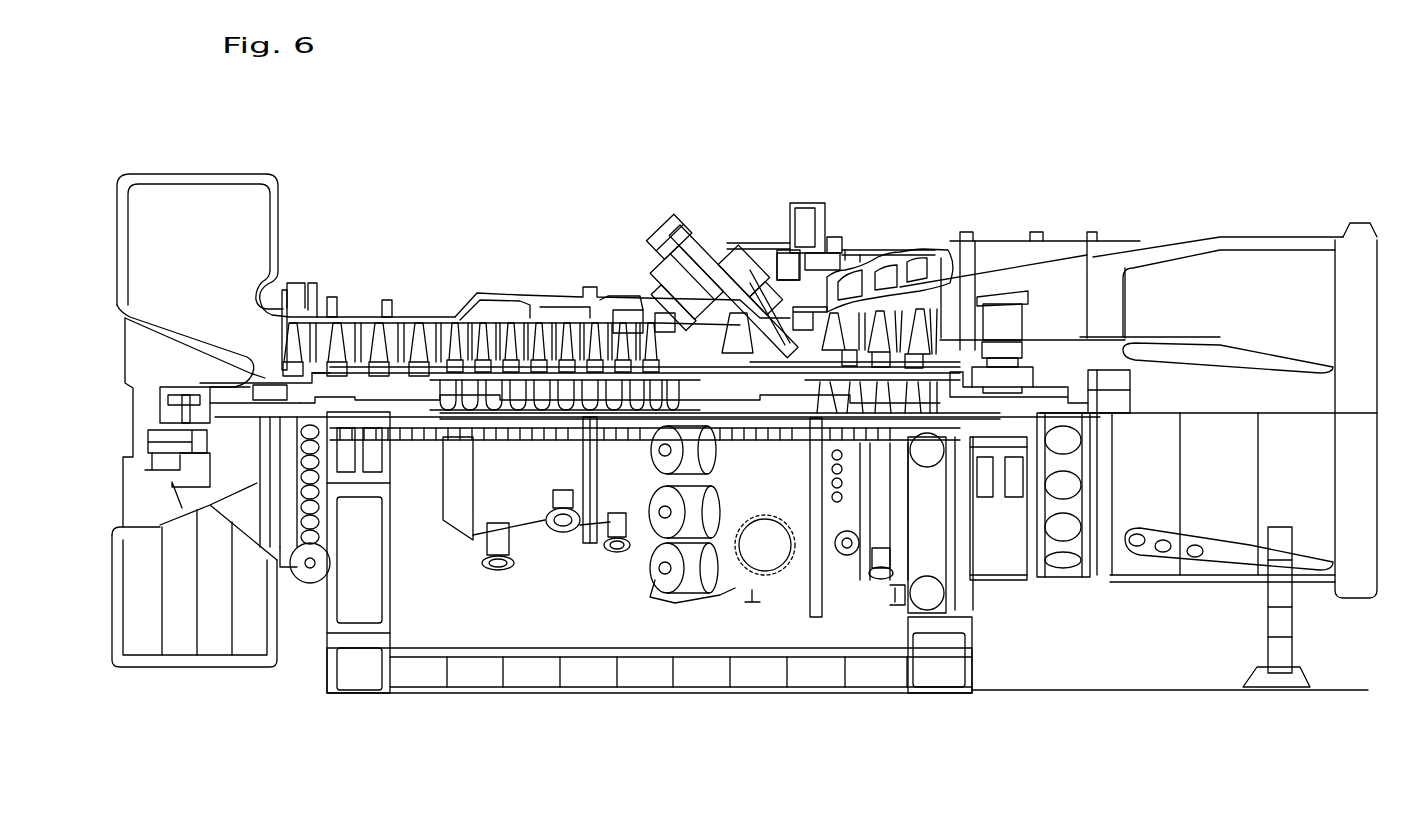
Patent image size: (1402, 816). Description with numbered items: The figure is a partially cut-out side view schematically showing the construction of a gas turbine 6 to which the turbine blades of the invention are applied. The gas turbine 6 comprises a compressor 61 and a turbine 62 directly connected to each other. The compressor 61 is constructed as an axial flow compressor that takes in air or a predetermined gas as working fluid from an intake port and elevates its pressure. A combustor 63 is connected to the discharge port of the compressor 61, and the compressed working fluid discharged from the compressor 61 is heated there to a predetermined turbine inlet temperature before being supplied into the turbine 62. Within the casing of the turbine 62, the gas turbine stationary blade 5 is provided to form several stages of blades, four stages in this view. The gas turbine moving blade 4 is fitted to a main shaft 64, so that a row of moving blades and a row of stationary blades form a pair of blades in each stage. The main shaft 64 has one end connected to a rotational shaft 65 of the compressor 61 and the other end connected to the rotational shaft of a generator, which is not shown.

The gas turbine 6 is at (770, 158).
The compressor 61 is at (440, 305).
The turbine 62 is at (912, 255).
The combustor 63 is at (725, 243).
The main shaft 64 is at (933, 403).
The rotational shaft 65 is at (380, 407).
The gas turbine moving blade 4 is at (917, 307).
The gas turbine stationary blade 5 is at (858, 266).